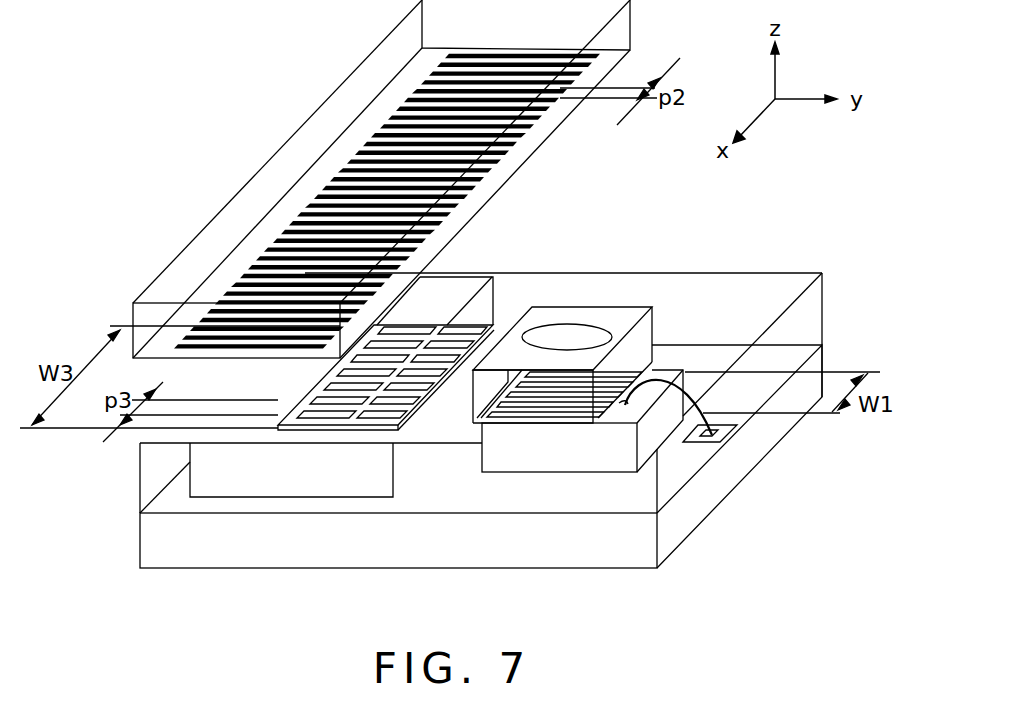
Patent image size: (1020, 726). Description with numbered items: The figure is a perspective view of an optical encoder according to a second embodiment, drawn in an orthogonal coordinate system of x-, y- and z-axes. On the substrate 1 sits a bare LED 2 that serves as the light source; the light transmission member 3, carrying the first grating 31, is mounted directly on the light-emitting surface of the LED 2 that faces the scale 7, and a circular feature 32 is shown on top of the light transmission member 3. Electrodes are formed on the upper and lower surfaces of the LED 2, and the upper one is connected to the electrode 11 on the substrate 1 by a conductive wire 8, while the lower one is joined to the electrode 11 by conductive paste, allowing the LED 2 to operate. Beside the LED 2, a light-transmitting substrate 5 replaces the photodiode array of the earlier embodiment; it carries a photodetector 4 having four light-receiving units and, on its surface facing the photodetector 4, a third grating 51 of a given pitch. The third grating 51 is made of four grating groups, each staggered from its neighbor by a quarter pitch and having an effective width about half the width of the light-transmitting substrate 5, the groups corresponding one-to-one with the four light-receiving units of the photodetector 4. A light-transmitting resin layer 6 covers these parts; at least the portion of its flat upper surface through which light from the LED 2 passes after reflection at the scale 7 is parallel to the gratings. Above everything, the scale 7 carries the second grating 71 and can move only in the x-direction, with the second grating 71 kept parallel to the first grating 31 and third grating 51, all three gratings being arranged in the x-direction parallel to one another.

The substrate 1 is at (591, 555).
The bare LED 2 is at (663, 425).
The light transmission member 3 is at (657, 318).
The first grating 31 is at (625, 373).
The optical element 32 is at (563, 318).
The photodetector 4 is at (253, 478).
The light-transmitting substrate 5 is at (290, 392).
The third grating 51 is at (367, 427).
The light-transmitting resin layer 6 is at (820, 304).
The scale 7 is at (232, 218).
The second grating 71 is at (205, 299).
The conductive wire 8 is at (737, 415).
The electrode 11 is at (712, 440).